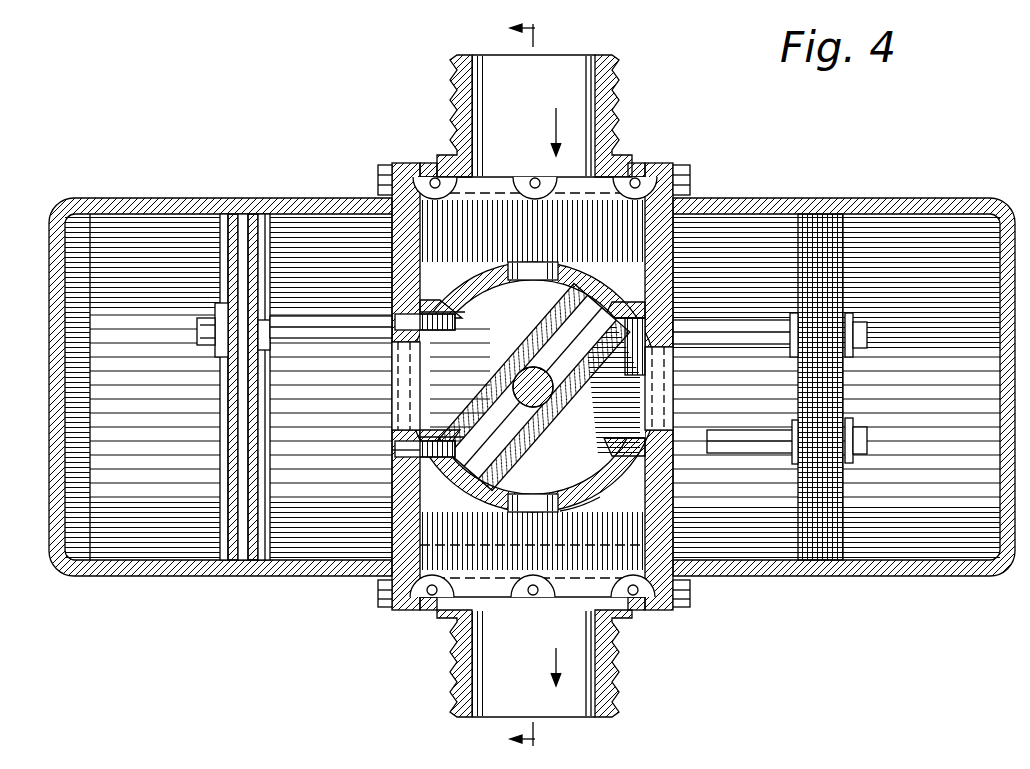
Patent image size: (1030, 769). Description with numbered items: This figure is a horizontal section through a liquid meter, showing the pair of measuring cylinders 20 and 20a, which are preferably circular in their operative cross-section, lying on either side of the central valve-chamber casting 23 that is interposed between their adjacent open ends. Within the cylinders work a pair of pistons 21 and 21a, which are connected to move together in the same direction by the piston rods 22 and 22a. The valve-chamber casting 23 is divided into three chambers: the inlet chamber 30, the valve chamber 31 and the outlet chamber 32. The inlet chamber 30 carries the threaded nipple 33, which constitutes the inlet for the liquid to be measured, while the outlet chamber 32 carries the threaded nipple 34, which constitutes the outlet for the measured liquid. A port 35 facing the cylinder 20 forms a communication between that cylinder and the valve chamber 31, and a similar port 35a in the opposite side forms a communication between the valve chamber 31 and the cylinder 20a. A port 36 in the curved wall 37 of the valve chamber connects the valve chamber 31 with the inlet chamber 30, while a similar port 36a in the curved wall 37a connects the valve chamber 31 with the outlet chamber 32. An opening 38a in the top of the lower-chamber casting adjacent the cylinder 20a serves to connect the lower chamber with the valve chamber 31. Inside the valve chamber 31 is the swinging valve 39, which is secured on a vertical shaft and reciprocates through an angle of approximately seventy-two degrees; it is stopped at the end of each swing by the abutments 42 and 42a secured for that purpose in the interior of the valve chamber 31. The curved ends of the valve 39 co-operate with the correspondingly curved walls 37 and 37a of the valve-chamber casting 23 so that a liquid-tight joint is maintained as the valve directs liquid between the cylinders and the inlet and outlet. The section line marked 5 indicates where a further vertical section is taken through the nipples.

The section line 5- 5 is at (525, 384).
The measuring cylinder 20 is at (231, 200).
The measuring cylinder 20a is at (782, 200).
The piston 21 is at (227, 404).
The piston 21a is at (845, 412).
The piston rod 22 is at (745, 432).
The piston rod 22a is at (347, 340).
The valve-chamber casting 23 is at (392, 462).
The inlet chamber 30 is at (534, 386).
The valve chamber 31 is at (459, 388).
The outlet chamber 32 is at (570, 560).
The threaded nipple 33 is at (534, 116).
The threaded nipple 34 is at (534, 663).
The port 35 is at (392, 398).
The port 35a is at (674, 414).
The port 36 is at (531, 266).
The port 36a is at (540, 510).
The curved wall 37 is at (490, 268).
The curved wall 37a is at (590, 493).
The opening 38a is at (602, 394).
The swinging valve 39 is at (505, 372).
The abutment 42 is at (451, 332).
The abutment 42a is at (440, 436).